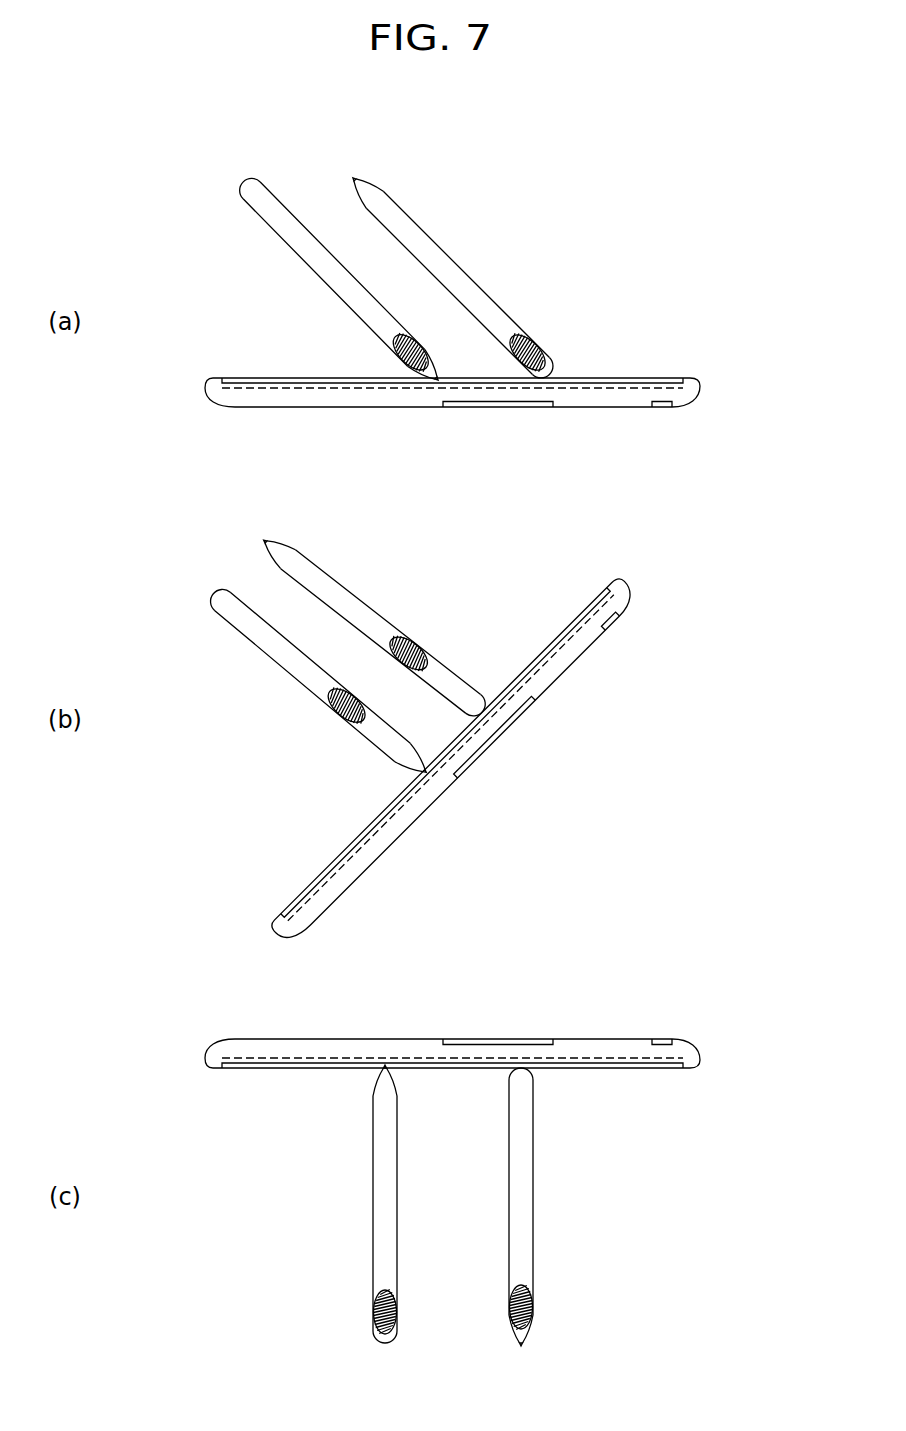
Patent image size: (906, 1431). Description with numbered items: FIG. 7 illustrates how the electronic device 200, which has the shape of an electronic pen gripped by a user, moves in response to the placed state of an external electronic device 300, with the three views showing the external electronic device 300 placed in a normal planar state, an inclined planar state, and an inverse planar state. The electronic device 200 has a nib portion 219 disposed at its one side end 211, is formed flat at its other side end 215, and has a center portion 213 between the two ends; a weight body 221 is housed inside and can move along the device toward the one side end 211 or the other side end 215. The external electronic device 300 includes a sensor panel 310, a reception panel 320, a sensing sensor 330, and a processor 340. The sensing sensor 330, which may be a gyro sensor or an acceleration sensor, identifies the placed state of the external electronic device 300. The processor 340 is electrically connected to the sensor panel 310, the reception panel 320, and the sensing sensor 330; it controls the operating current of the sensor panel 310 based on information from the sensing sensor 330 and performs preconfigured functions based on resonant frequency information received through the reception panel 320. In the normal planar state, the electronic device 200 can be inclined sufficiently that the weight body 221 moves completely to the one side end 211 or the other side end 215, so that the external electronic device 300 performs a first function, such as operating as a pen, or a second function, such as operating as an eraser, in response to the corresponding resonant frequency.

The electronic device 200 is at (400, 756).
The one side end 211 is at (434, 380).
The center portion 213 is at (308, 266).
The other side end 215 is at (246, 182).
The nib portion 219 is at (354, 180).
The weight body 221 is at (540, 338).
The external electronic device 300 is at (492, 723).
The sensor panel 310 is at (702, 384).
The reception panel 320 is at (687, 376).
The sensing sensor 330 is at (662, 407).
The processor 340 is at (512, 407).